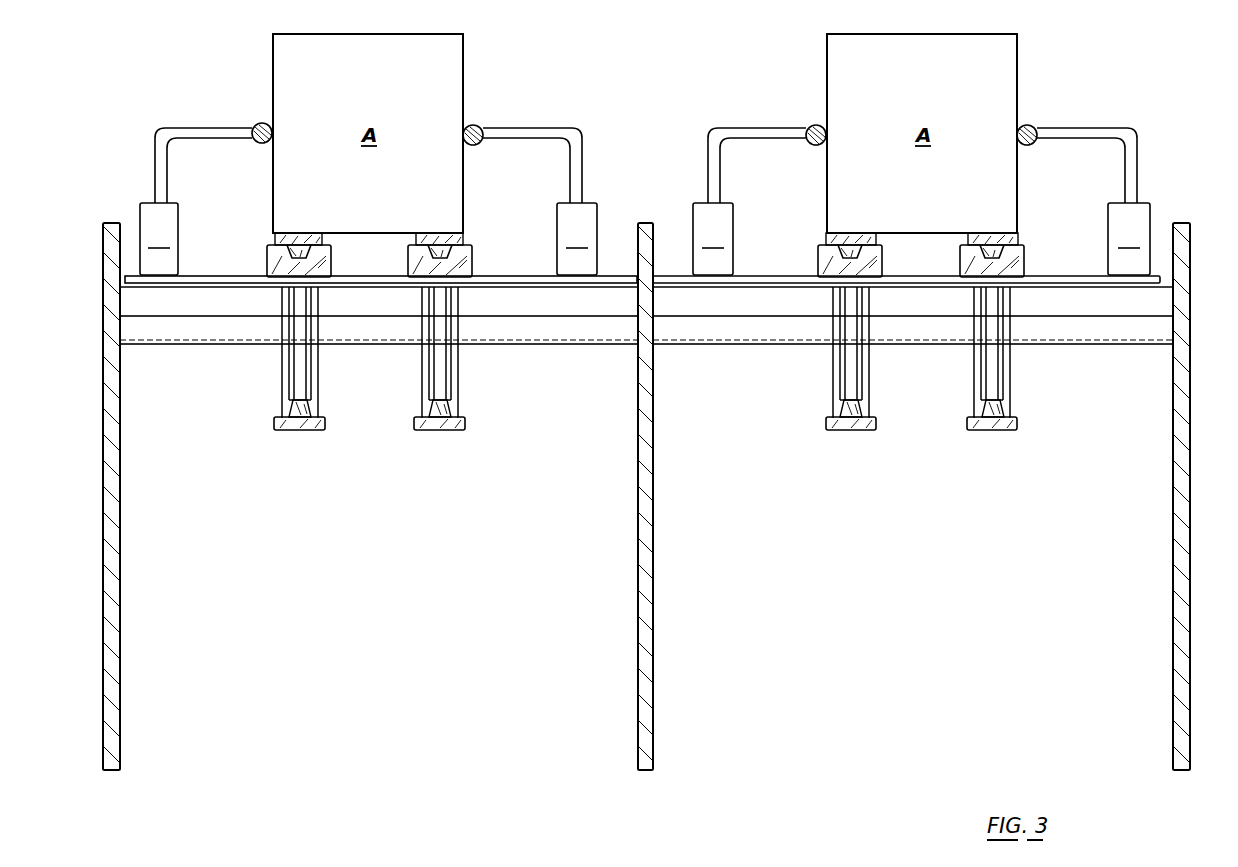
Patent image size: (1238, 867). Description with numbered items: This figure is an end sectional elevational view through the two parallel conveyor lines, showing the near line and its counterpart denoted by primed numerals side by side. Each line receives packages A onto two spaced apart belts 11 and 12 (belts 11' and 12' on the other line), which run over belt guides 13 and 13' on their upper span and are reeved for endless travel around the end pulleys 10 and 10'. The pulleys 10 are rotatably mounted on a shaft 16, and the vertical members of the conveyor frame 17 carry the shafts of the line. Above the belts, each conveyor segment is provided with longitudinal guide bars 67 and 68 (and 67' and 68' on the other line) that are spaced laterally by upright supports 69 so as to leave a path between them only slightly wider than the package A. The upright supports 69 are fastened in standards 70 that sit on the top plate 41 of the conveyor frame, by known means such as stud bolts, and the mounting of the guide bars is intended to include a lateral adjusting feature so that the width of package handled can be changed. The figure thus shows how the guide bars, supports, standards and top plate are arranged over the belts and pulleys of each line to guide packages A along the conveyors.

The end pulleys 10 is at (944, 352).
The end pulleys 10' is at (392, 352).
The belt 11 is at (860, 347).
The belt 11' is at (294, 340).
The belt 12 is at (1001, 347).
The belt 12' is at (464, 341).
The belt guides 13 is at (940, 261).
The belt guides 13' is at (373, 261).
The shaft 16 is at (204, 330).
The frame 17 is at (1212, 593).
The top plate 41 is at (196, 279).
The longitudinal guide bar 67 is at (1038, 117).
The longitudinal guide bar 67' is at (489, 117).
The longitudinal guide bar 68 is at (805, 117).
The longitudinal guide bar 68' is at (249, 116).
The upright supports 69 is at (1156, 163).
The standards 70 is at (1145, 270).